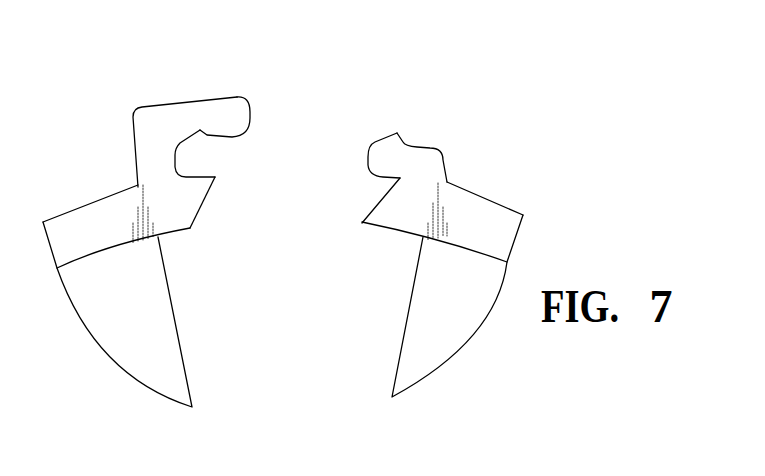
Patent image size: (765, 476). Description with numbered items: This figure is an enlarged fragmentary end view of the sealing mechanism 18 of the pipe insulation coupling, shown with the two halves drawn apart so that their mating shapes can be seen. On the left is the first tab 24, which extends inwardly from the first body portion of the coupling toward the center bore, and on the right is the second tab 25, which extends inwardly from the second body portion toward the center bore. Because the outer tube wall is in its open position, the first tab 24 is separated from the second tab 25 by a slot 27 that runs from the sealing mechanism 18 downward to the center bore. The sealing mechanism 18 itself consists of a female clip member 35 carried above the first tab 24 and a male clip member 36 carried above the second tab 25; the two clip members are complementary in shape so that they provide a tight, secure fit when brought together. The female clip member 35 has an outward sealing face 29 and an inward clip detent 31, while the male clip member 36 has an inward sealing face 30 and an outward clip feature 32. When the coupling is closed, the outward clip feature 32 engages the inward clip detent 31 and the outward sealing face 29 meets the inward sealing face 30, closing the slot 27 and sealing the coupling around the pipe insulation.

The sealing mechanism 18 is at (309, 30).
The first tab 24 is at (119, 328).
The second tab 25 is at (433, 322).
The slot 27 is at (289, 380).
The outward sealing face 29 is at (187, 202).
The inward sealing face 30 is at (402, 207).
The inward clip detent 31 is at (187, 130).
The outward clip feature 32 is at (403, 138).
The female clip member 35 is at (225, 98).
The male clip member 36 is at (384, 135).